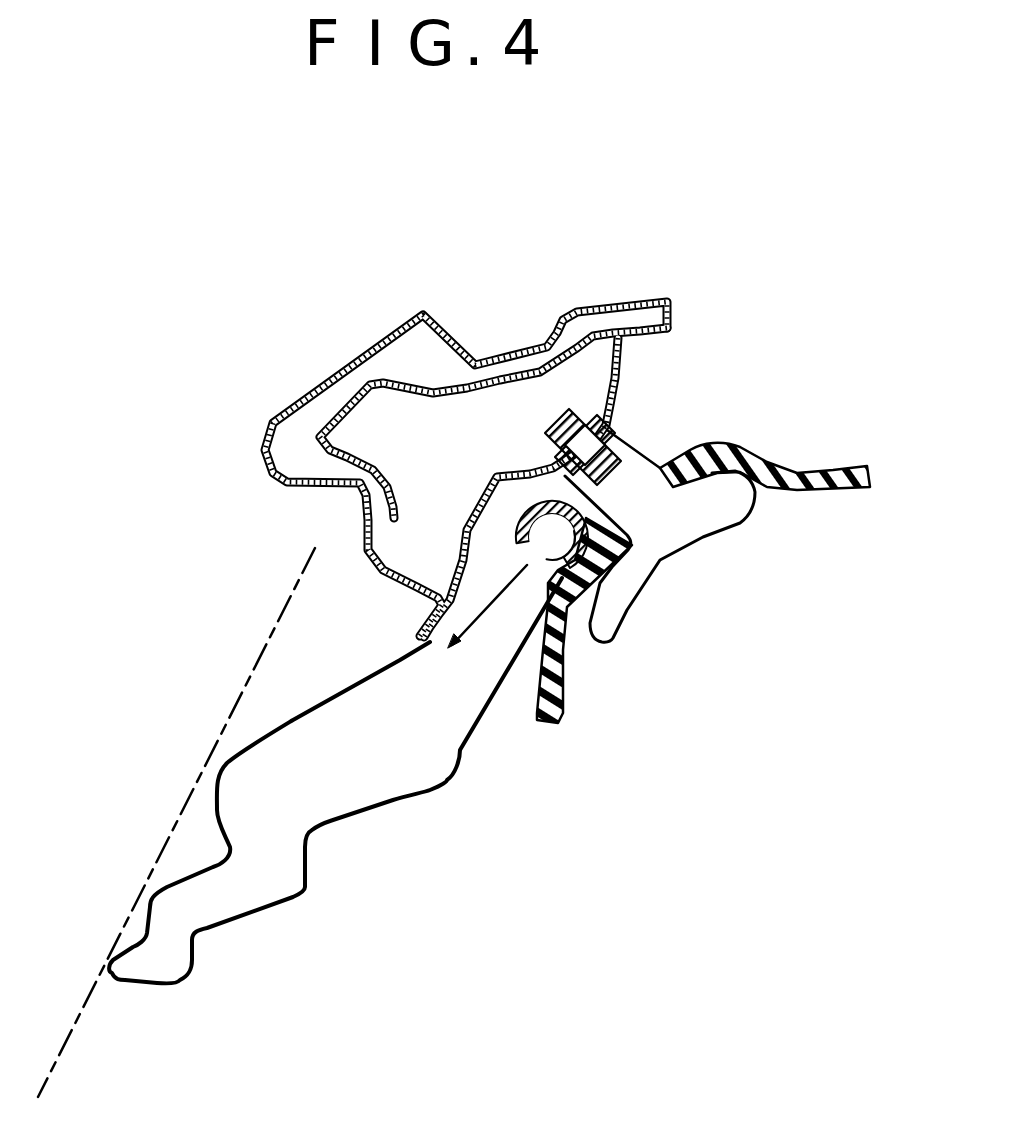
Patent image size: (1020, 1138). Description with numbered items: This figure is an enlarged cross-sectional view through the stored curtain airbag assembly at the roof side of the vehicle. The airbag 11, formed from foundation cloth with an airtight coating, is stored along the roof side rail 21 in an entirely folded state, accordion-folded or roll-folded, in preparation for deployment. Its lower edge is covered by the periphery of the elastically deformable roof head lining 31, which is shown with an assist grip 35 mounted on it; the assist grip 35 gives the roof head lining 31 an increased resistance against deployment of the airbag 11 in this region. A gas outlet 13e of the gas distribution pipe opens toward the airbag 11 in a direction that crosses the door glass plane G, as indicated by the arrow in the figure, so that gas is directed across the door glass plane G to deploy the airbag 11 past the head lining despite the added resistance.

The roof side rail 21 is at (497, 477).
The gas outlet 13e is at (533, 553).
The assist grip 35 is at (678, 543).
The roof head lining 31 is at (797, 489).
The airbag 11 is at (397, 800).
The door glass plane G is at (223, 728).